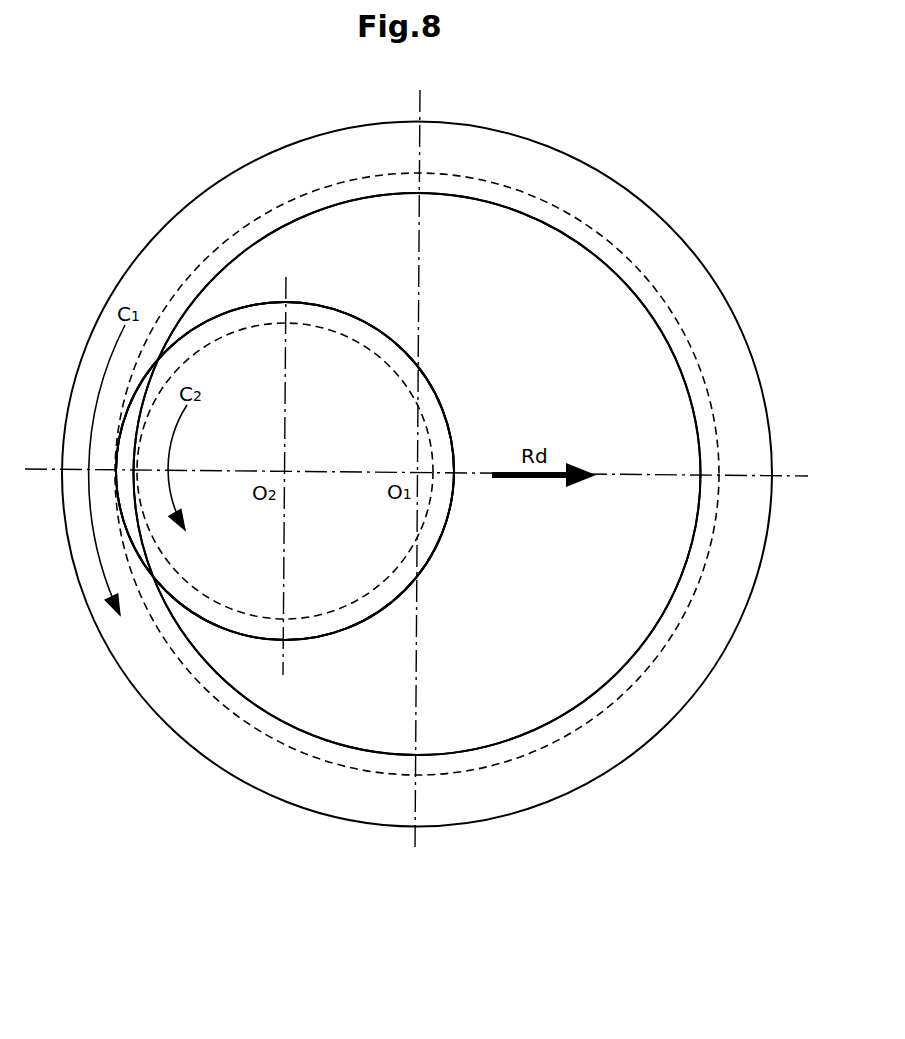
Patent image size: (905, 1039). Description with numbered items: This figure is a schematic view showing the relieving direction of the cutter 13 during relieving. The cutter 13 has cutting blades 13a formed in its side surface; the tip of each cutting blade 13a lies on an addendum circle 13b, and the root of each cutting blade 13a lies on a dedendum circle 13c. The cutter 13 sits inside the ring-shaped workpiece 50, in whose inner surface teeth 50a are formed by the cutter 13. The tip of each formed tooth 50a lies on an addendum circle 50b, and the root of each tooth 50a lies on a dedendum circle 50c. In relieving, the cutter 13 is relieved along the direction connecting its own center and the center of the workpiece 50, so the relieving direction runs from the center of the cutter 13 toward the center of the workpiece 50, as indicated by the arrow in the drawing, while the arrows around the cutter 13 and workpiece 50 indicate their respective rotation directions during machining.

The workpiece 50 is at (197, 217).
The teeth 50a is at (672, 623).
The addendum circle 50b is at (623, 665).
The dedendum circle 50c is at (595, 717).
The cutter 13 is at (347, 367).
The cutting blades 13a is at (395, 362).
The addendum circle 13b is at (433, 390).
The dedendum circle 13c is at (430, 440).